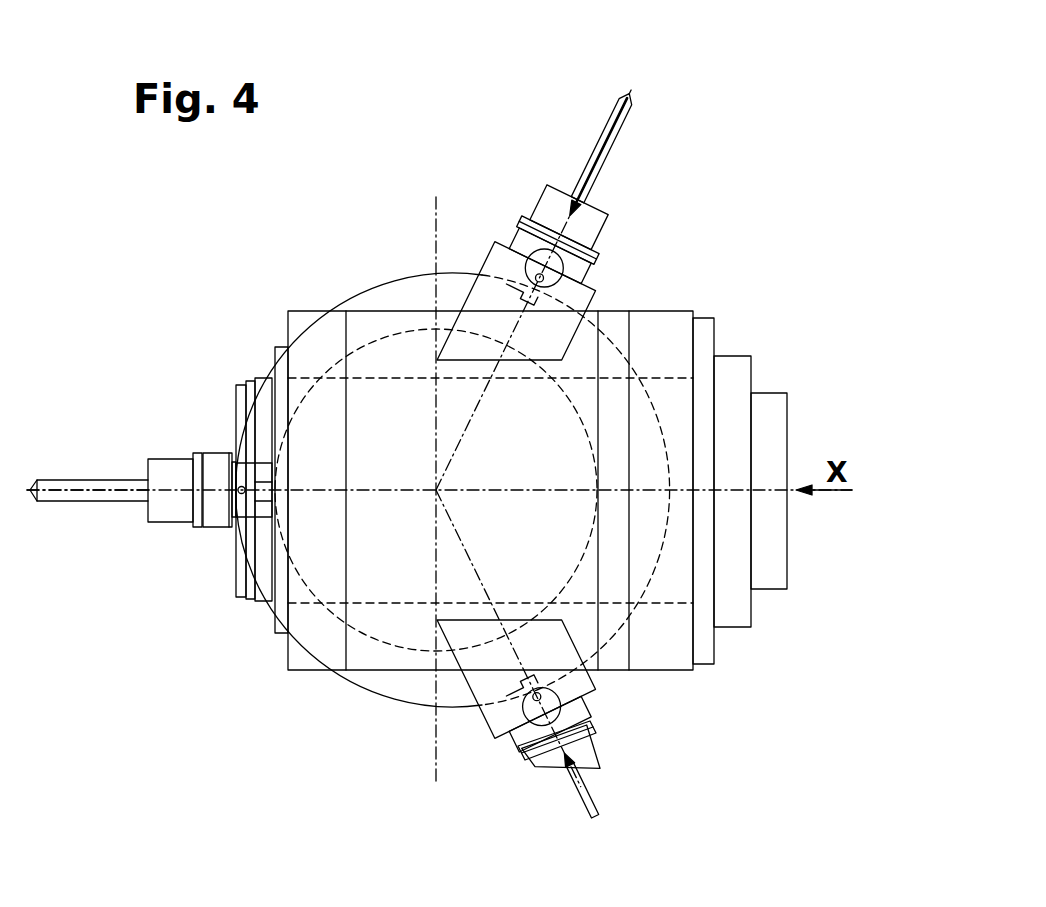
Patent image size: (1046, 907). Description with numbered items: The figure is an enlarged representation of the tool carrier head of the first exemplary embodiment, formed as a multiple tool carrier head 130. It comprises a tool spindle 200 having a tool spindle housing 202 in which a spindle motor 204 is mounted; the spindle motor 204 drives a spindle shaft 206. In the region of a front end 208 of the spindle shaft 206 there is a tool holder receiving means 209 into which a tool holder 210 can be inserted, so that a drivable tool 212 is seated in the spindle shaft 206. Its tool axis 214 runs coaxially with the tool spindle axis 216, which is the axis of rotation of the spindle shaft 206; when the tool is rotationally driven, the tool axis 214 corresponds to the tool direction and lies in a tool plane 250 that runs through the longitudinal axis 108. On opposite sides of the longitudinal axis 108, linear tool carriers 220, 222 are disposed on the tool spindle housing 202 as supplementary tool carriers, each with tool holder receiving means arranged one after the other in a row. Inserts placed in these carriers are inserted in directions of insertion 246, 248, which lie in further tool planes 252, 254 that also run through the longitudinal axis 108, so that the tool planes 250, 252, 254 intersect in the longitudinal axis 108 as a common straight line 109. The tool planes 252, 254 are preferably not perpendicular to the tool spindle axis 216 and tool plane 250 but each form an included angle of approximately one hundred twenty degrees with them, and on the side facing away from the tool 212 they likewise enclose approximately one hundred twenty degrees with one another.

The longitudinal axis 108 is at (435, 490).
The common straight line 109 is at (436, 490).
The multiple tool carrier head 130 is at (425, 165).
The tool spindle 200 is at (409, 678).
The tool spindle housing 202 is at (382, 590).
The spindle motor 204 is at (671, 389).
The spindle shaft 206 is at (262, 592).
The front end 208 is at (229, 542).
The tool holder receiving means 209 is at (213, 453).
The tool holder 210 is at (163, 504).
The drivable tool 212 is at (87, 502).
The tool axis 214 is at (60, 480).
The tool spindle axis 216 is at (392, 490).
The linear tool carrier 220 is at (552, 201).
The linear tool carrier 222 is at (518, 743).
The direction of insertion 246 is at (587, 187).
The direction of insertion 248 is at (572, 783).
The tool plane 250 is at (120, 480).
The tool plane 252 is at (640, 96).
The tool plane 254 is at (594, 735).